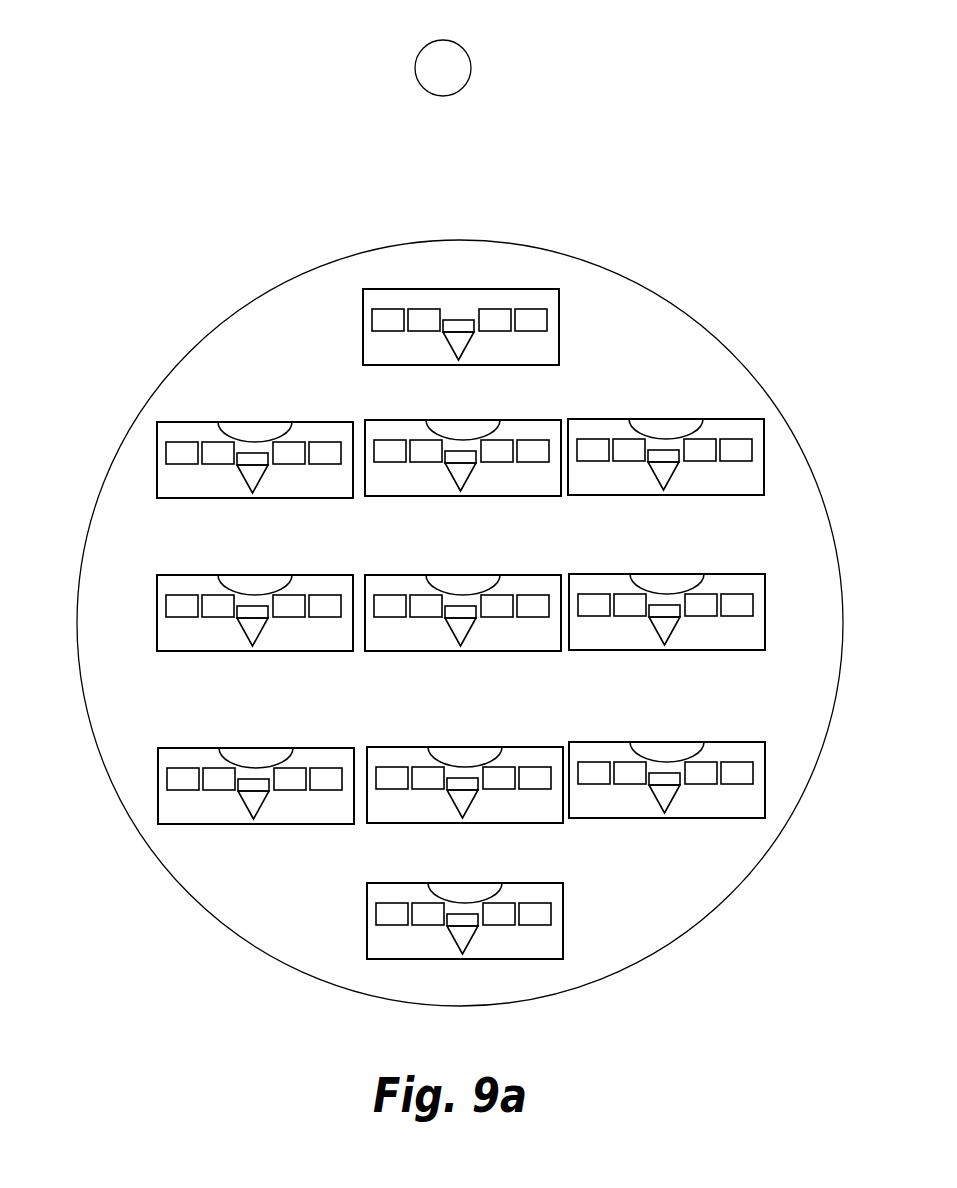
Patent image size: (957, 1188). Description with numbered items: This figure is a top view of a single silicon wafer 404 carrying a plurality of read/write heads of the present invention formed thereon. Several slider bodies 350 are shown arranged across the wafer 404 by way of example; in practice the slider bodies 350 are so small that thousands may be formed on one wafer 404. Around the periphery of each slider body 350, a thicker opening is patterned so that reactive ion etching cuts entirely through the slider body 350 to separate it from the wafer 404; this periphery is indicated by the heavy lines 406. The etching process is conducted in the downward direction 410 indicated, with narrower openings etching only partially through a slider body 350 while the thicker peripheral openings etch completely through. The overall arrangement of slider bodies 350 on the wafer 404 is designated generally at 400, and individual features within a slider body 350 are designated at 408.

The wafer assembly 400 is at (100, 250).
The wafer 404 is at (725, 343).
The heavy lines 406 is at (452, 276).
The bond pad 408 is at (433, 303).
The slider body 350 is at (512, 350).
The etching downward 410 is at (472, 66).